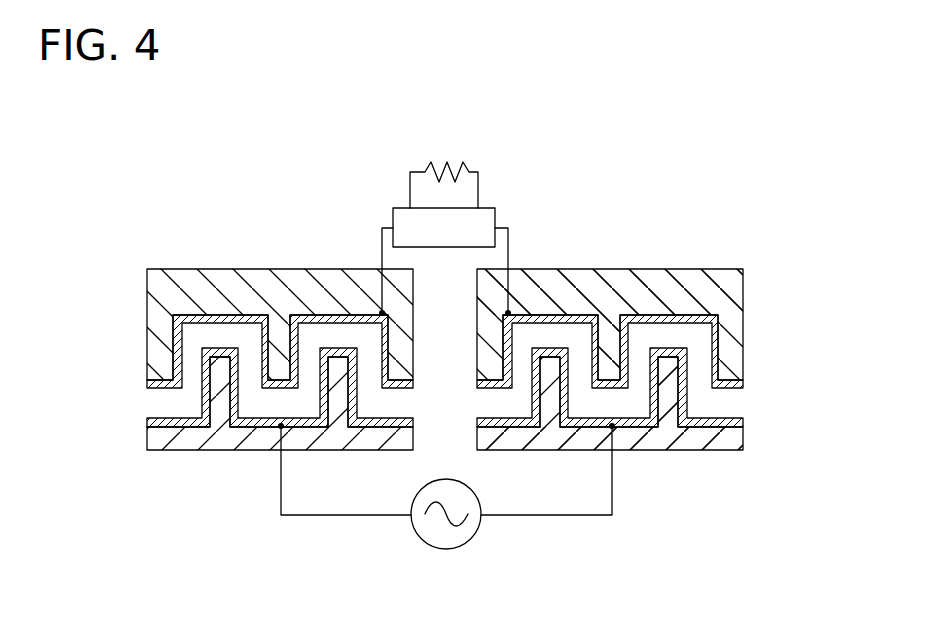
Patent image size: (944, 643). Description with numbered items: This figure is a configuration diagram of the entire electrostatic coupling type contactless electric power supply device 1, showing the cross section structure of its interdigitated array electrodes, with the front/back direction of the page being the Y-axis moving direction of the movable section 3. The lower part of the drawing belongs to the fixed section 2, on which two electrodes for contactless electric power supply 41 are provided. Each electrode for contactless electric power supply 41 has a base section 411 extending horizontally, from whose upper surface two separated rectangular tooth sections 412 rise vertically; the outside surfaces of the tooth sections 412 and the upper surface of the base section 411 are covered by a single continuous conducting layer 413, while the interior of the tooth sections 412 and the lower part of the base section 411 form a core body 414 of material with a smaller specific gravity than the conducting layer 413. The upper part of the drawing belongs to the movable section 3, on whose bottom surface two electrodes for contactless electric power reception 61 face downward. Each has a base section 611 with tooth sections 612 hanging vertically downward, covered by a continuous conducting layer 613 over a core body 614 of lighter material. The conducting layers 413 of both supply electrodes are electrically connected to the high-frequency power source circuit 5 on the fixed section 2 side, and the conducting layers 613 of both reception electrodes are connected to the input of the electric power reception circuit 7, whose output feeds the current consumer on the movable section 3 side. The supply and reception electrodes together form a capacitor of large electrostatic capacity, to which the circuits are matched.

The electrostatic coupling type contactless electric power supply device 1 is at (116, 158).
The fixed section 2 is at (123, 398).
The movable section 3 is at (85, 398).
The high-frequency power source circuit 5 is at (470, 545).
The electric power reception circuit 7 is at (456, 239).
The electrode for contactless electric power supply 41 is at (217, 460).
The base section 411 is at (647, 438).
The tooth section 412 is at (670, 390).
The conducting layer 413 is at (742, 423).
The core body 414 is at (723, 437).
The electrode for contactless electric power reception 61 is at (238, 262).
The base section 611 is at (674, 288).
The tooth section 612 is at (613, 360).
The conducting layer 613 is at (737, 385).
The core body 614 is at (725, 292).